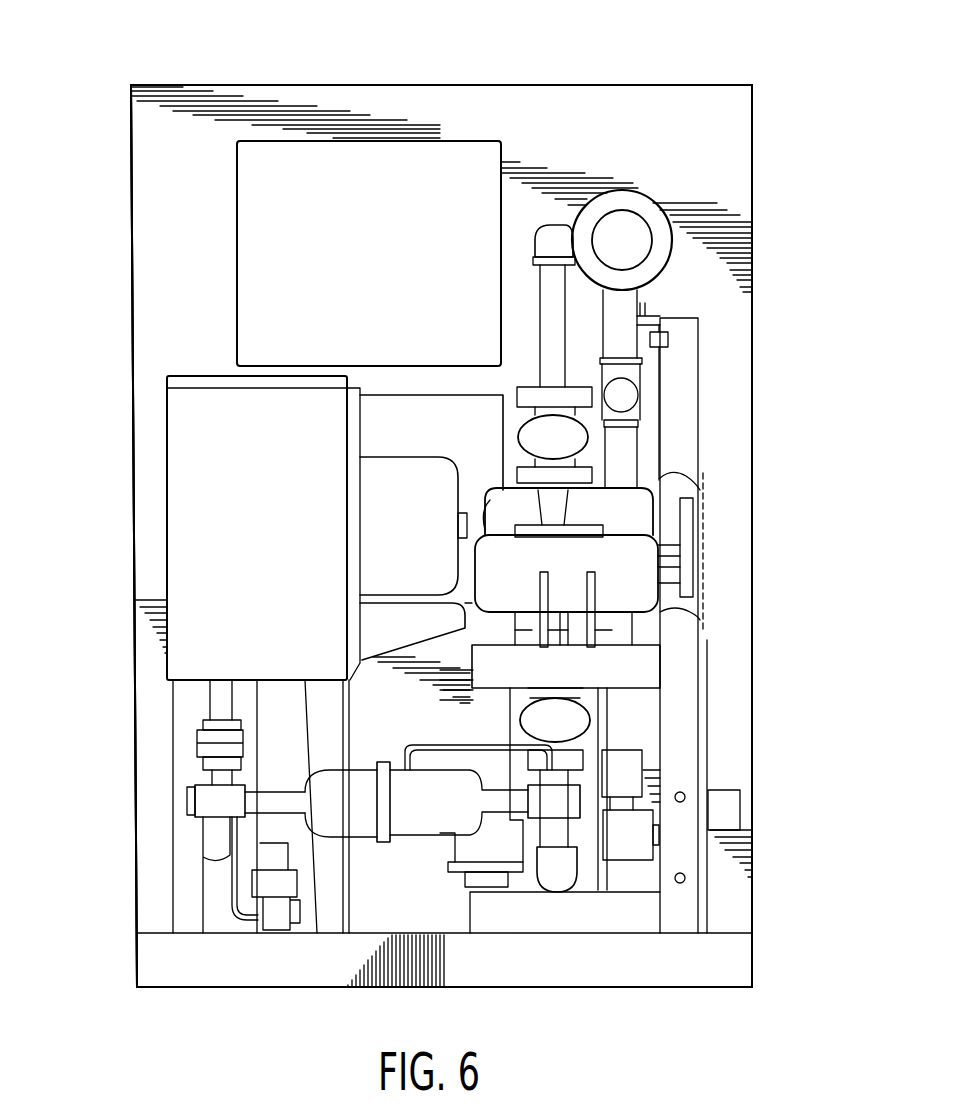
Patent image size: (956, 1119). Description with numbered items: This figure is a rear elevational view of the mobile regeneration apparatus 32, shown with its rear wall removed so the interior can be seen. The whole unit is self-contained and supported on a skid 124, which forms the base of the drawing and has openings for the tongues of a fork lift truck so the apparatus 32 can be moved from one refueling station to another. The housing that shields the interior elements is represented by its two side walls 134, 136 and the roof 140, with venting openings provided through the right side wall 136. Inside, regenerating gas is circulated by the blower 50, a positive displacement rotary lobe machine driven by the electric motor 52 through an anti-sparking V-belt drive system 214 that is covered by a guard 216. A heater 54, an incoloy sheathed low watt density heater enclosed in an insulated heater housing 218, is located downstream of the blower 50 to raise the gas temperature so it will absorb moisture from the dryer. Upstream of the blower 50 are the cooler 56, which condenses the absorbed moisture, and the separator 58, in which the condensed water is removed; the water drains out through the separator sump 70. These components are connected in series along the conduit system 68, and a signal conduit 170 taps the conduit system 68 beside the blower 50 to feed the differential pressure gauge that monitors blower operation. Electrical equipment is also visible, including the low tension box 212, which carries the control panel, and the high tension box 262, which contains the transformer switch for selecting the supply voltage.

The mobile regeneration apparatus 32 is at (772, 340).
The blower 50 is at (655, 590).
The electric motor 52 is at (648, 500).
The heater 54 is at (617, 208).
The cooler 56 is at (167, 470).
The separator 58 is at (367, 823).
The conduit system 68 is at (546, 236).
The separator sump 70 is at (493, 880).
The skid 124 is at (267, 968).
The left side wall 134 is at (772, 662).
The right side wall 136 is at (132, 255).
The roof 140 is at (463, 85).
The signal conduit 170 is at (405, 745).
The low tension box 212 is at (390, 211).
The anti-sparking V-belt drive system 214 is at (660, 538).
The guard 216 is at (698, 627).
The insulated heater housing 218 is at (676, 252).
The high tension box 262 is at (443, 424).